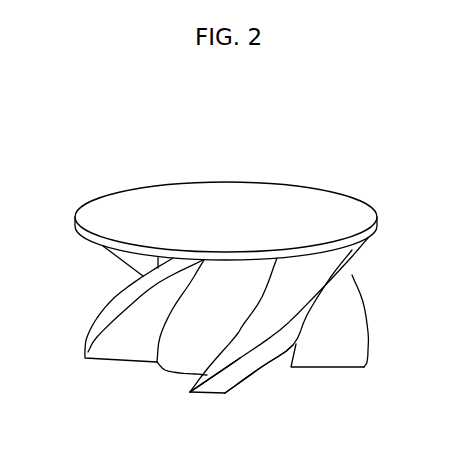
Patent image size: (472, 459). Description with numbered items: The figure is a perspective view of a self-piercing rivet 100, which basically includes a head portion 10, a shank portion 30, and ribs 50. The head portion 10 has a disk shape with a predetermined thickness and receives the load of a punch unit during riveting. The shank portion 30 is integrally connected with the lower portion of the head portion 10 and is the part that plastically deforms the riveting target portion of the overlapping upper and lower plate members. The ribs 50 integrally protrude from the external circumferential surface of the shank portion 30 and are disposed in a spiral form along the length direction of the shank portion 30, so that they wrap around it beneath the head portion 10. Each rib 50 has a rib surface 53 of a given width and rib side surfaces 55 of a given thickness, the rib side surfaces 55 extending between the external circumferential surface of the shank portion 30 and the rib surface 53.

The self-piercing rivet 100 is at (243, 110).
The head portion 10 is at (235, 188).
The shank portion 30 is at (185, 357).
The rib 50 is at (313, 335).
The rib surface 53 is at (267, 352).
The rib side surface 55 is at (128, 320).